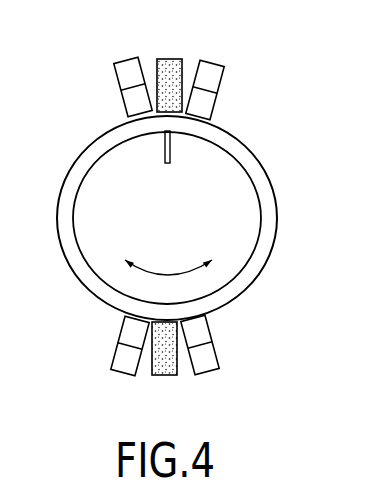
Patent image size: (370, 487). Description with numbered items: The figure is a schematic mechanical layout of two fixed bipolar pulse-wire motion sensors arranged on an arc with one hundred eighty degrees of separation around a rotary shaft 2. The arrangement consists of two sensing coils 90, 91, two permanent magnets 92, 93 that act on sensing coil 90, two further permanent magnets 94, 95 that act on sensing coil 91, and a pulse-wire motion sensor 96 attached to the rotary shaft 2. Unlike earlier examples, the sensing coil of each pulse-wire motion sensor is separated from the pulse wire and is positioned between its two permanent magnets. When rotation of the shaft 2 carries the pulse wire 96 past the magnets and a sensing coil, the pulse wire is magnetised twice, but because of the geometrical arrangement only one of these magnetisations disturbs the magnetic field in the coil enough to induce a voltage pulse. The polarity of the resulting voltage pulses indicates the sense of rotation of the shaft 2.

The rotary shaft 2 is at (233, 180).
The sensing coil 90 is at (179, 59).
The sensing coil 91 is at (167, 375).
The permanent magnet 92 is at (115, 65).
The permanent magnet 93 is at (222, 70).
The permanent magnet 94 is at (113, 367).
The permanent magnet 95 is at (218, 365).
The pulse-wire motion sensor 96 is at (170, 150).